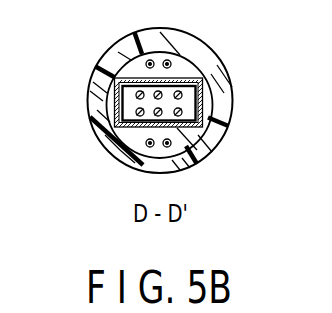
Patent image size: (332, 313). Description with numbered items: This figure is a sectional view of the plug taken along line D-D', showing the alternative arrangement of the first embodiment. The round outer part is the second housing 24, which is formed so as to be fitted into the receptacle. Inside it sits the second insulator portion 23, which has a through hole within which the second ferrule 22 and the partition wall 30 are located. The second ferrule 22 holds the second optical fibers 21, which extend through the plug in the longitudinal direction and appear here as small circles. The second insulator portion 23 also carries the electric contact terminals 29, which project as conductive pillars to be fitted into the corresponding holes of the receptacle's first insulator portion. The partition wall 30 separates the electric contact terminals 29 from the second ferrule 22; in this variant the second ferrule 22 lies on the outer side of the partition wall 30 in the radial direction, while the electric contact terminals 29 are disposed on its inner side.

The second optical fibers 21 is at (174, 63).
The second ferrule 22 is at (133, 66).
The second insulator portion 23 is at (95, 75).
The second housing 24 is at (211, 133).
The electric contact terminals 29 is at (201, 80).
The partition wall 30 is at (205, 155).